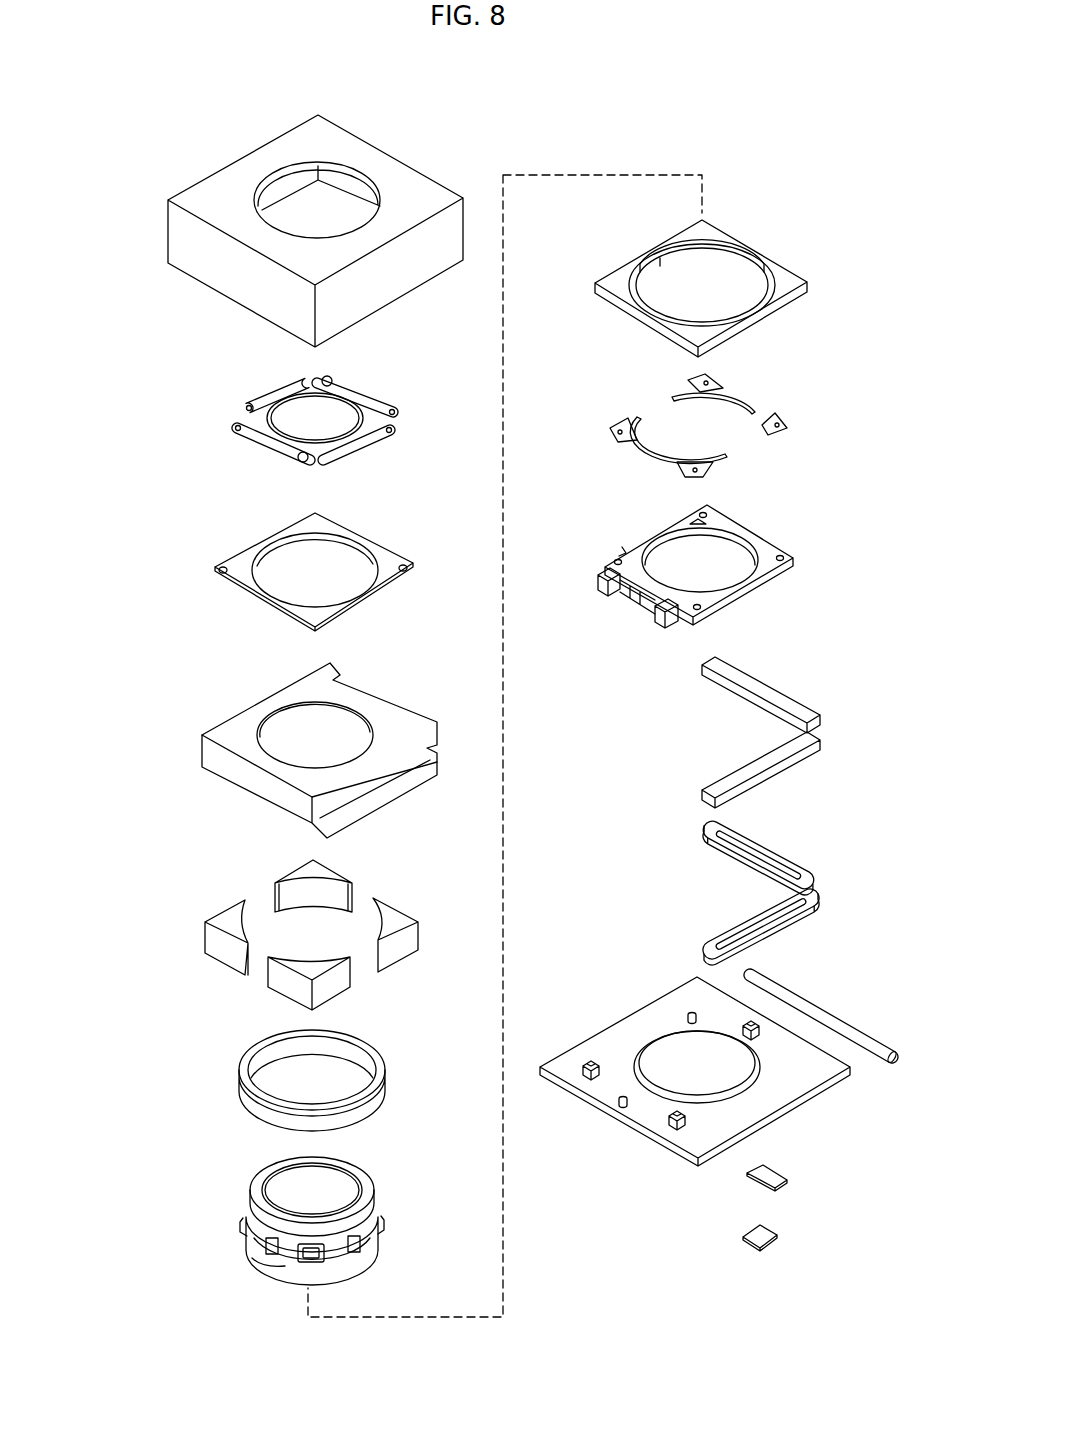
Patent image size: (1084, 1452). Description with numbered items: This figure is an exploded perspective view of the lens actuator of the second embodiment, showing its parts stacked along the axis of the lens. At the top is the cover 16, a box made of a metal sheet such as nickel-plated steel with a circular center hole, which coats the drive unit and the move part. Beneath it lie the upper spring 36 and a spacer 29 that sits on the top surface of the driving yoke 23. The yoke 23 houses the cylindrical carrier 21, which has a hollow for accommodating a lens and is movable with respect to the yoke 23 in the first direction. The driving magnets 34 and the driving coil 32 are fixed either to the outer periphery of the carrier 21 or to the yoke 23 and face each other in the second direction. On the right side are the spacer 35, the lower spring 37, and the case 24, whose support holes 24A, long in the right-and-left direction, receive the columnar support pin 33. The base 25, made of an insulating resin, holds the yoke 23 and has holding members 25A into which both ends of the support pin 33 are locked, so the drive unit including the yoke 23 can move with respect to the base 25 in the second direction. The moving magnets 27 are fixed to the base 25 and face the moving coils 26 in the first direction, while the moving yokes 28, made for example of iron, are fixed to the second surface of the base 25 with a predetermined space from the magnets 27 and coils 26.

The cover 16 is at (236, 156).
The carrier 21 is at (248, 1195).
The driving yoke 23 is at (242, 708).
The case 24 is at (687, 573).
The support holes 24A is at (663, 622).
The base 25 is at (695, 1073).
The holding members 25A is at (675, 1127).
The moving coils 26 is at (813, 903).
The moving magnets 27 is at (818, 728).
The moving yokes 28 is at (767, 1225).
The spacer 29 is at (242, 542).
The driving coil 32 is at (243, 1052).
The support pin 33 is at (835, 1015).
The driving magnets 34 is at (216, 917).
The spacer 35 is at (758, 250).
The upper spring 36 is at (258, 393).
The lower spring 37 is at (760, 402).